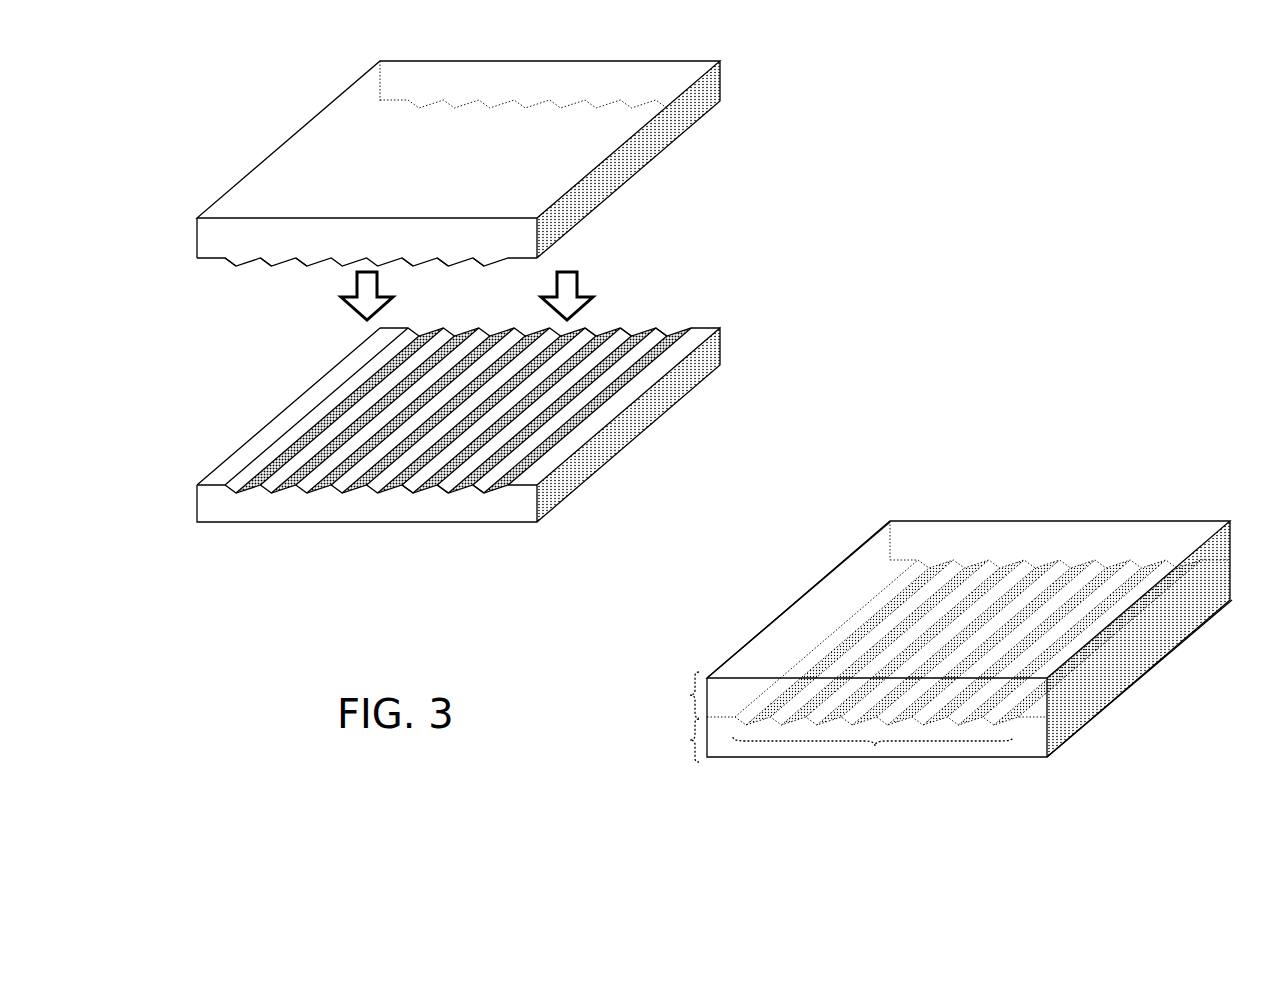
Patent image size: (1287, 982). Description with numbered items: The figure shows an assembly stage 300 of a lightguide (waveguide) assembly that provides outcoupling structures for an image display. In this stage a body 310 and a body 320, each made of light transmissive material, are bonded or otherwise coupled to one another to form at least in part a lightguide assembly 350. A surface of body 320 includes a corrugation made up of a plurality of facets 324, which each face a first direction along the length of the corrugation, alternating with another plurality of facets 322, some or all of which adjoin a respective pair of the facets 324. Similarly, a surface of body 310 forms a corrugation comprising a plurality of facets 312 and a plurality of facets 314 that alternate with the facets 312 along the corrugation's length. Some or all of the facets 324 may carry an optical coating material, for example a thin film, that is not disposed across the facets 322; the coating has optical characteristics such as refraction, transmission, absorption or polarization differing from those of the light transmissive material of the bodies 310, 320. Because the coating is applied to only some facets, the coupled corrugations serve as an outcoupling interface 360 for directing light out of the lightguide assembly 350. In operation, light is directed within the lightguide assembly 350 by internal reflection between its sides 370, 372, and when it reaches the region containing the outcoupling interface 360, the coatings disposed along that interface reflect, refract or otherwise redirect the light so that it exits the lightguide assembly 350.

The assembly stage 300 is at (805, 207).
The body 310 is at (458, 196).
The plurality of facets 312 is at (468, 270).
The plurality of facets 314 is at (318, 270).
The body 320 is at (474, 404).
The plurality of facets 322 is at (472, 496).
The plurality of facets 324 is at (678, 324).
The lightguide assembly 350 is at (1145, 465).
The outcoupling interface 360 is at (875, 746).
The side of the lightguide assembly 370 is at (745, 645).
The side of the lightguide assembly 372 is at (1112, 705).